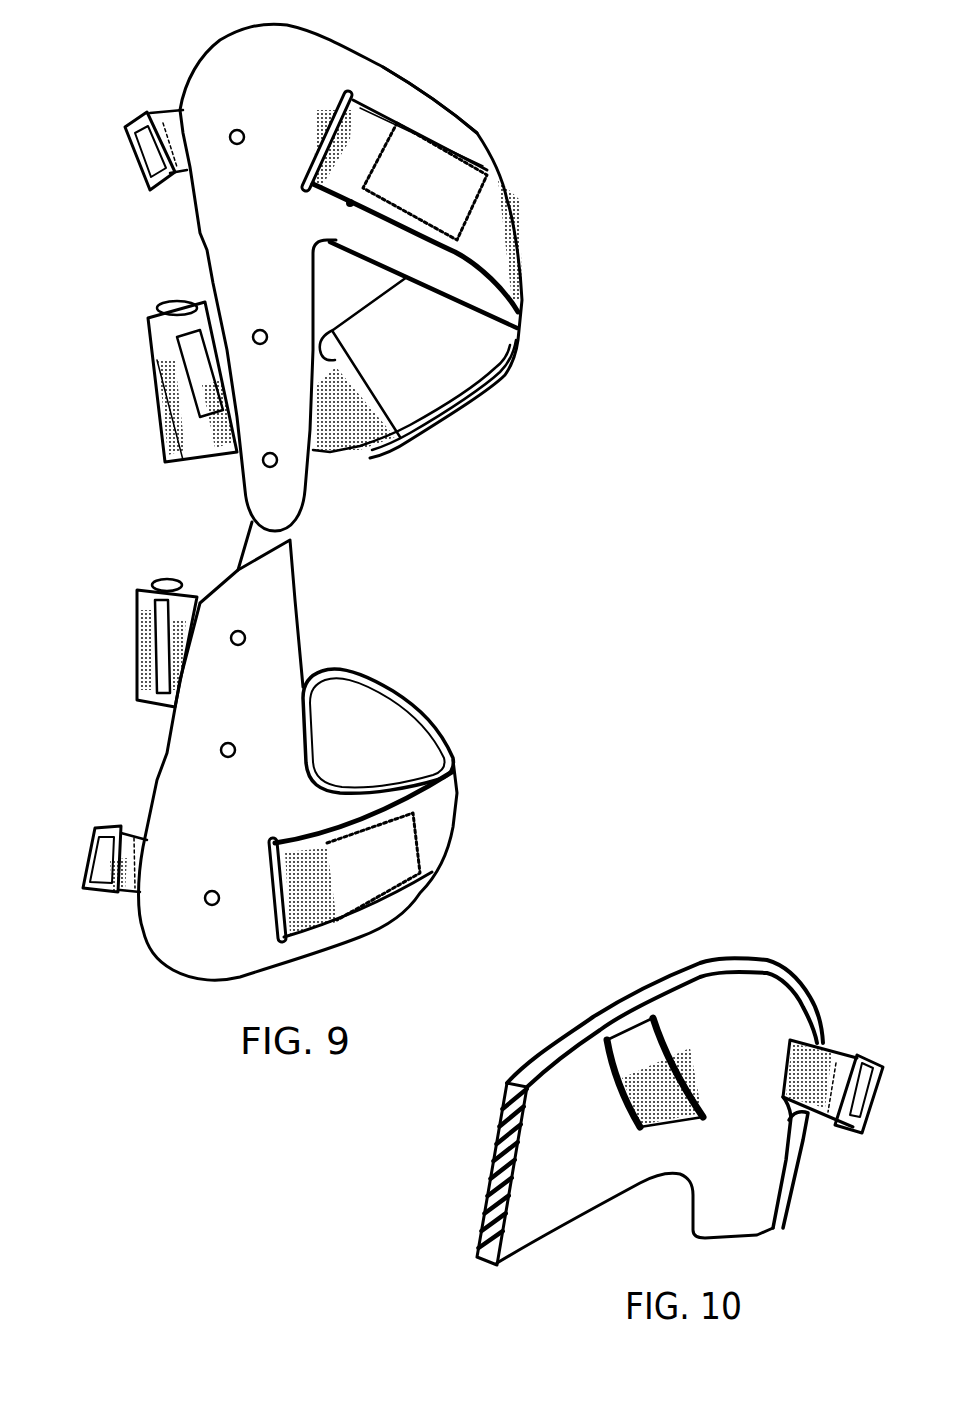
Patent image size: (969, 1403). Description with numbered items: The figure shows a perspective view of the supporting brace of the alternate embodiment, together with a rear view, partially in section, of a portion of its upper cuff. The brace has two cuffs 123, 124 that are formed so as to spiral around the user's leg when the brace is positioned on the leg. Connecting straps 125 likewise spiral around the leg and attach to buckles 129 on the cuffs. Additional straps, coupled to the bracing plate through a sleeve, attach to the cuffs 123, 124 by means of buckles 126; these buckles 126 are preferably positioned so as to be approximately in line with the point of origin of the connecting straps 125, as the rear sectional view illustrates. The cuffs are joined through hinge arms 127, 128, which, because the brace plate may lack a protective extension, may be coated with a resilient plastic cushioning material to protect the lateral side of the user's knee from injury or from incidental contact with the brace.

In FIG. 9, the cuff 123 is at (393, 90).
In FIG. 10, the cuff 123 is at (713, 996).
In FIG. 9, the cuff 124 is at (355, 928).
In FIG. 9, the connecting strap 125 is at (497, 256).
In FIG. 10, the connecting strap 125 is at (650, 1050).
In FIG. 9, the buckle 126 is at (140, 122).
In FIG. 10, the buckle 126 is at (857, 1130).
In FIG. 9, the hinge arm 127 is at (223, 255).
In FIG. 9, the hinge arm 128 is at (185, 766).
In FIG. 9, the buckle 129 is at (175, 312).